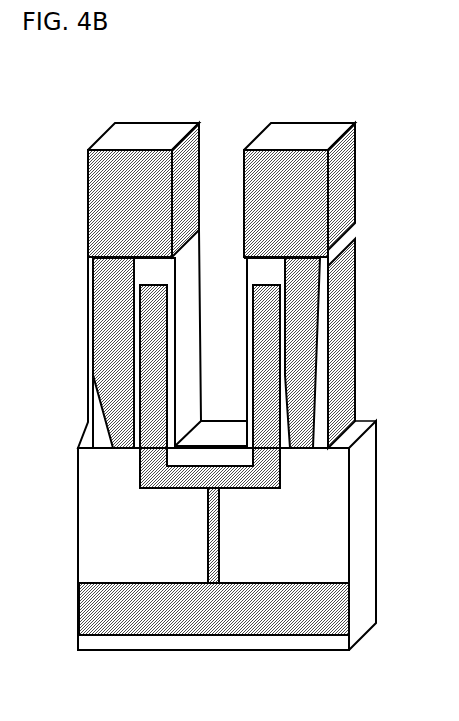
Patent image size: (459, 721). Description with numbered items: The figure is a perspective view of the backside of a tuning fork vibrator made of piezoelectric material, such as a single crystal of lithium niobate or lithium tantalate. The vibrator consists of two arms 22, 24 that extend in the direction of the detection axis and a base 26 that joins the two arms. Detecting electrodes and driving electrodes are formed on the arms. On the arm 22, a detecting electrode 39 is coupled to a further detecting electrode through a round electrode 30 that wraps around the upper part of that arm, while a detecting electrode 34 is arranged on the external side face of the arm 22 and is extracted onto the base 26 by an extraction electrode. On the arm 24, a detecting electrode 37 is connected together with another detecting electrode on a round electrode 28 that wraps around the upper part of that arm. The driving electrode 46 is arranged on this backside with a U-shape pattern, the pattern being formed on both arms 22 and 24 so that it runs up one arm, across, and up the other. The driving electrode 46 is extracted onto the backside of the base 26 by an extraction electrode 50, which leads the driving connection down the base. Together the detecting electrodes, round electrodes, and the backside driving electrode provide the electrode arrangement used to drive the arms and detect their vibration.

The arm 22 is at (297, 130).
The arm 24 is at (143, 133).
The base 26 is at (362, 504).
The round electrode 28 is at (87, 184).
The round electrode 30 is at (345, 193).
The detecting electrode 34 is at (347, 337).
The detecting electrode 37 is at (110, 287).
The detecting electrode 39 is at (307, 283).
The driving electrode 46 is at (277, 413).
The extraction electrode 50 is at (222, 628).